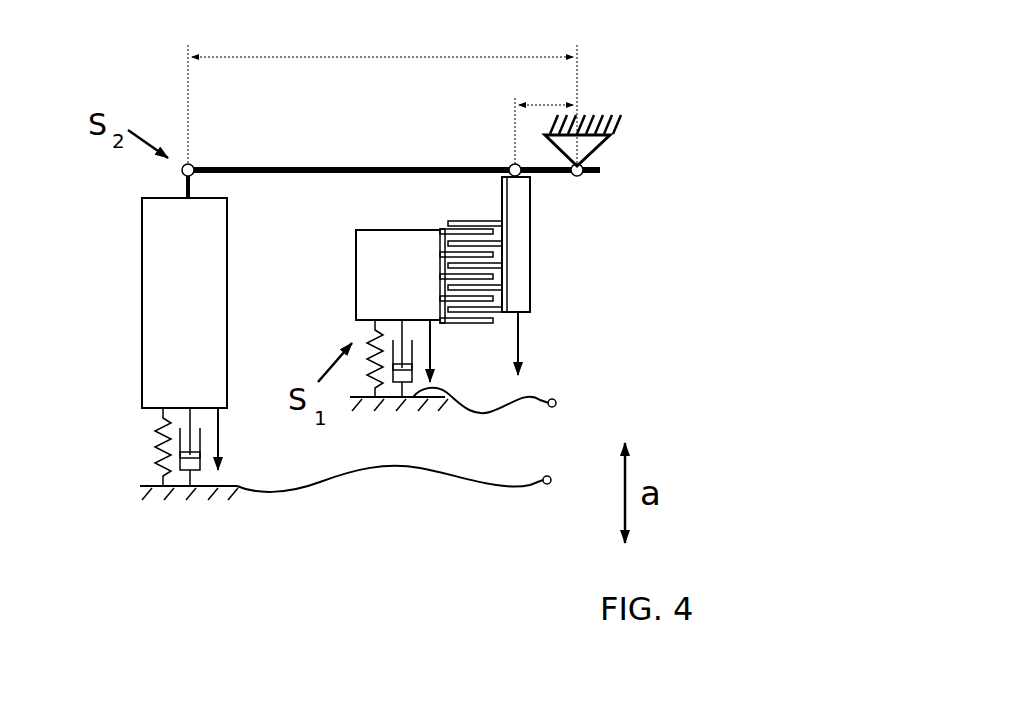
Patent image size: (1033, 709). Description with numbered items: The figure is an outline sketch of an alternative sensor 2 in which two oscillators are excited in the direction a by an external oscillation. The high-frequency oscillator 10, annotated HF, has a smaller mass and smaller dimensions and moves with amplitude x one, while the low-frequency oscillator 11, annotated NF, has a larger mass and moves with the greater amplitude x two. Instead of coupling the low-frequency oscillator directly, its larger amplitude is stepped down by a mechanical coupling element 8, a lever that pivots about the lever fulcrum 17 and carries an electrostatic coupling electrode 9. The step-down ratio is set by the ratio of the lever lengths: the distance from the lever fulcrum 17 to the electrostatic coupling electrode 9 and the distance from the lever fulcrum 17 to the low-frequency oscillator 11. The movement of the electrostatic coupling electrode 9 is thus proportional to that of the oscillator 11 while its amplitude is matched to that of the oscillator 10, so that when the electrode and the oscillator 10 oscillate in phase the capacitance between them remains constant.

The sensor 2 is at (660, 48).
The mechanical coupling element 8 is at (313, 166).
The electrostatic coupling electrode 9 is at (530, 226).
The oscillator 10 is at (388, 230).
The oscillator 11 is at (140, 228).
The lever fulcrum 17 is at (582, 163).